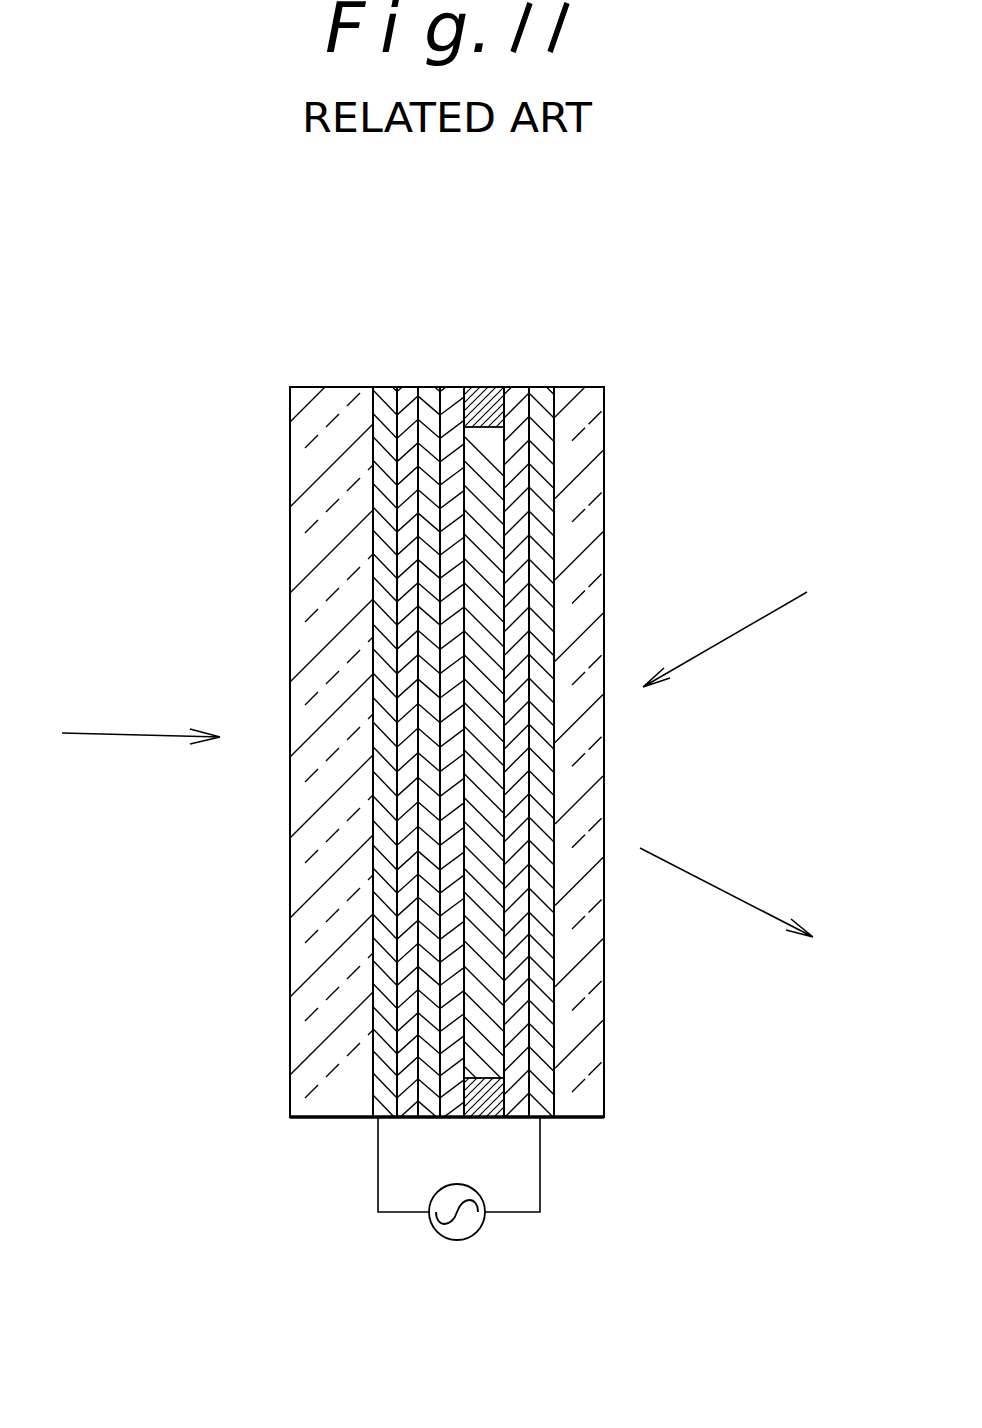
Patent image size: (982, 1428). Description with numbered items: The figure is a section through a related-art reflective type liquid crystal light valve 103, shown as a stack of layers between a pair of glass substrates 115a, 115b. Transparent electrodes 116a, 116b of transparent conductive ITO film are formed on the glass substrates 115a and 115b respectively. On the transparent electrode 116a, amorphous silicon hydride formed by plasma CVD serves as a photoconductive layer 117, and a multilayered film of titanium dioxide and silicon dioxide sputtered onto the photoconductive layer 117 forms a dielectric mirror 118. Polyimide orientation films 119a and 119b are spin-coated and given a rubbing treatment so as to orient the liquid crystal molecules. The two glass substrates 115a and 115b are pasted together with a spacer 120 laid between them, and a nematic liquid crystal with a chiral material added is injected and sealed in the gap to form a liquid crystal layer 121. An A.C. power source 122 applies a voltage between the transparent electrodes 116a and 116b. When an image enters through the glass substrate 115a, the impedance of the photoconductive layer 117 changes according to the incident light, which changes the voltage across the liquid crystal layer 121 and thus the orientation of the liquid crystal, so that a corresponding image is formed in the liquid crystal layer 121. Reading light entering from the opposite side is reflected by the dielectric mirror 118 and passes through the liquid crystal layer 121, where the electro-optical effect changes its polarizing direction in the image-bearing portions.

The reflective type liquid crystal light valve 103 is at (650, 310).
The glass substrate 115a is at (310, 392).
The glass substrate 115b is at (580, 392).
The transparent electrode 116a is at (380, 1090).
The transparent electrode 116b is at (537, 1072).
The photoconductive layer 117 is at (403, 387).
The dielectric mirror 118 is at (425, 1105).
The orientation film 119a is at (452, 388).
The orientation film 119b is at (518, 387).
The spacer 120 is at (482, 1100).
The liquid crystal layer 121 is at (488, 958).
The A.C. power source 122 is at (472, 1238).